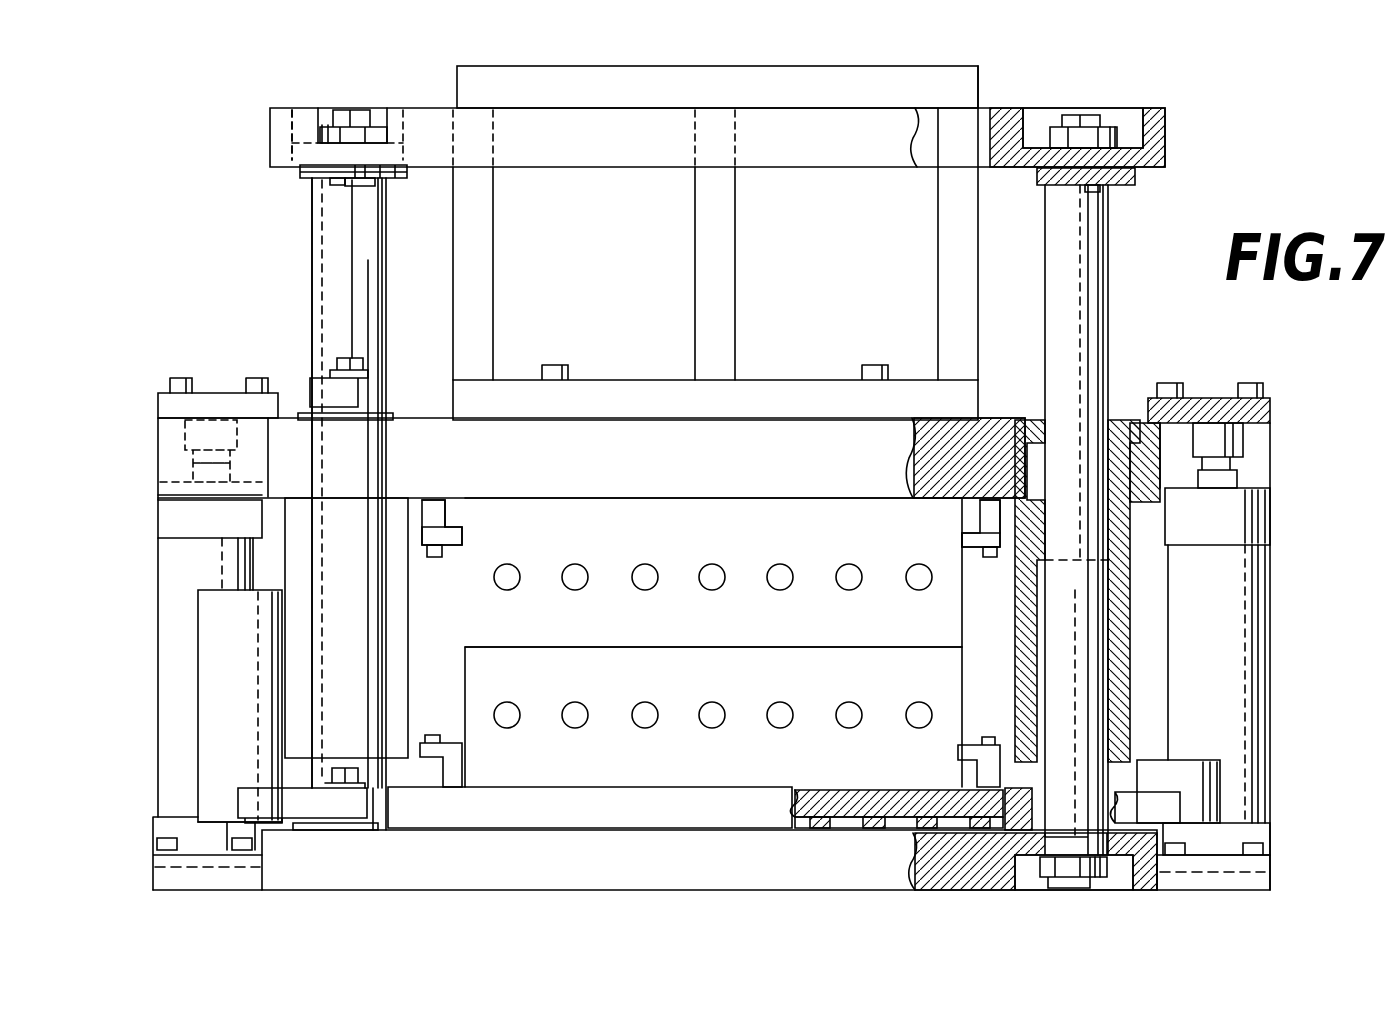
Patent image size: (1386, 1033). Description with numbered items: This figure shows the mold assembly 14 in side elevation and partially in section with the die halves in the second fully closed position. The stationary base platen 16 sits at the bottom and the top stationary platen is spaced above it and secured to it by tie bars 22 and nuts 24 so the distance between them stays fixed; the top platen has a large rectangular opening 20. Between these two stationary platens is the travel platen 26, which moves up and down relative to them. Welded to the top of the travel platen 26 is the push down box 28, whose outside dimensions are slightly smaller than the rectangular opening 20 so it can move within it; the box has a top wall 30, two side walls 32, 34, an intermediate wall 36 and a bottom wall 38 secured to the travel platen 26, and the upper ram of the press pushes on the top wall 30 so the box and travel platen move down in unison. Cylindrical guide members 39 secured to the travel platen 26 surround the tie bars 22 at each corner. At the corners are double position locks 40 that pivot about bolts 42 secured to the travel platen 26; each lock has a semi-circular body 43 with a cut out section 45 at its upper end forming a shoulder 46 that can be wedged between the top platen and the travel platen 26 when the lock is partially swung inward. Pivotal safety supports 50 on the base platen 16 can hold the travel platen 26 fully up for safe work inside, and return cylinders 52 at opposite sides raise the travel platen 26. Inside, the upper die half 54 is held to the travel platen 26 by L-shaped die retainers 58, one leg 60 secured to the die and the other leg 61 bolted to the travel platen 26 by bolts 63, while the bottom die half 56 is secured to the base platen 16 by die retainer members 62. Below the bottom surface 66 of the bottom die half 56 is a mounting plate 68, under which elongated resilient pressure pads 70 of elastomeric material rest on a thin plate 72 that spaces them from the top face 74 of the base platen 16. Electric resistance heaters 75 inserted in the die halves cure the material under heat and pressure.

The mold assembly 14 is at (220, 250).
The stationary base platen 16 is at (370, 880).
The rectangular opening 20 is at (990, 110).
The tie bars 22 is at (350, 110).
The nuts 24 is at (335, 130).
The travel platen 26 is at (795, 490).
The push down box 28 is at (457, 85).
The top wall 30 is at (735, 64).
The side wall 32 is at (938, 219).
The side wall 34 is at (493, 216).
The intermediate wall 36 is at (702, 216).
The bottom wall 38 is at (765, 385).
The cylindrical guide members 39 is at (352, 567).
The double position lock 40 is at (308, 260).
The bolts 42 is at (335, 362).
The lock body 43 is at (312, 215).
The cut out section 45 is at (332, 182).
The shoulder 46 is at (370, 183).
The safety supports 50 is at (275, 700).
The return cylinders 52 is at (170, 629).
The upper die half 54 is at (530, 637).
The bottom die half 56 is at (535, 683).
The die retainers 58 is at (450, 520).
The leg 60 is at (462, 535).
The leg 61 is at (432, 507).
The die retainer members 62 is at (448, 771).
The bolts 63 is at (435, 555).
The bottom surface 66 is at (818, 800).
The mounting plate 68 is at (870, 790).
The resilient pressure pads 70 is at (818, 828).
The thin plate 72 is at (872, 828).
The top face 74 is at (909, 828).
The electric resistance heaters 75 is at (702, 702).